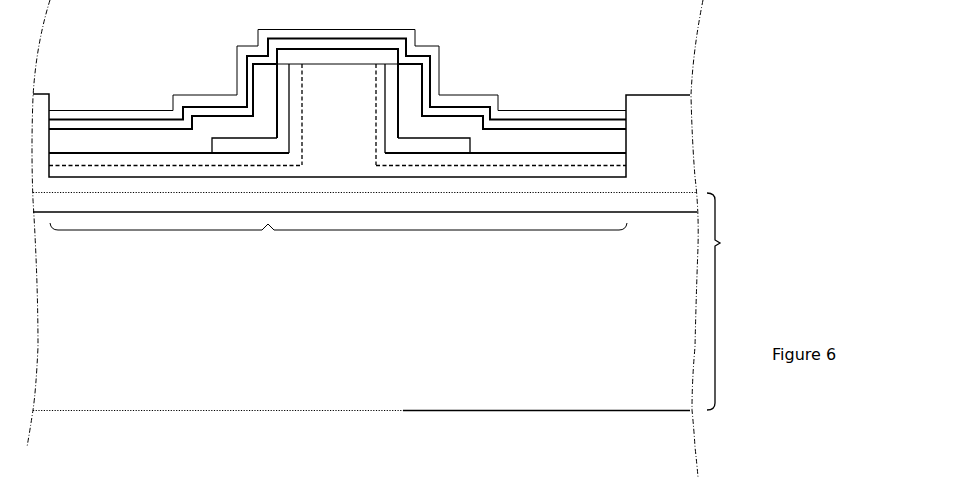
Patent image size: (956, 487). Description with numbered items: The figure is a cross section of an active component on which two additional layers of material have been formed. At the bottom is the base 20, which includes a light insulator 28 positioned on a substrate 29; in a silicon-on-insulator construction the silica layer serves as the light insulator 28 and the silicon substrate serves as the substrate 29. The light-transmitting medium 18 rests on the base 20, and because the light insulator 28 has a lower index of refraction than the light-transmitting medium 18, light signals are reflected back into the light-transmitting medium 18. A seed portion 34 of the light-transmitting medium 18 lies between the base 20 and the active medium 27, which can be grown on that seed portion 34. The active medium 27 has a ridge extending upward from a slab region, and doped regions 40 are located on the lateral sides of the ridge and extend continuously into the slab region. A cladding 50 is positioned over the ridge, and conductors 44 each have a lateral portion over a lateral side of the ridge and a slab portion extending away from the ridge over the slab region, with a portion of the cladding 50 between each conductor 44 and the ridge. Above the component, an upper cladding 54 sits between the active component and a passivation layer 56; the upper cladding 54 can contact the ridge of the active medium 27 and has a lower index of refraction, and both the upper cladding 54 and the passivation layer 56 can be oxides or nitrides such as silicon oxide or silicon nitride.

The light-transmitting medium 18 is at (643, 118).
The base 20 is at (726, 301).
The active medium 27 is at (633, 180).
The light insulator 28 is at (660, 203).
The substrate 29 is at (138, 393).
The seed portion 34 is at (338, 240).
The doped regions 40 is at (300, 114).
The conductors 44 is at (158, 143).
The cladding 50 is at (440, 147).
The upper cladding 54 is at (72, 128).
The passivation layer 56 is at (210, 103).